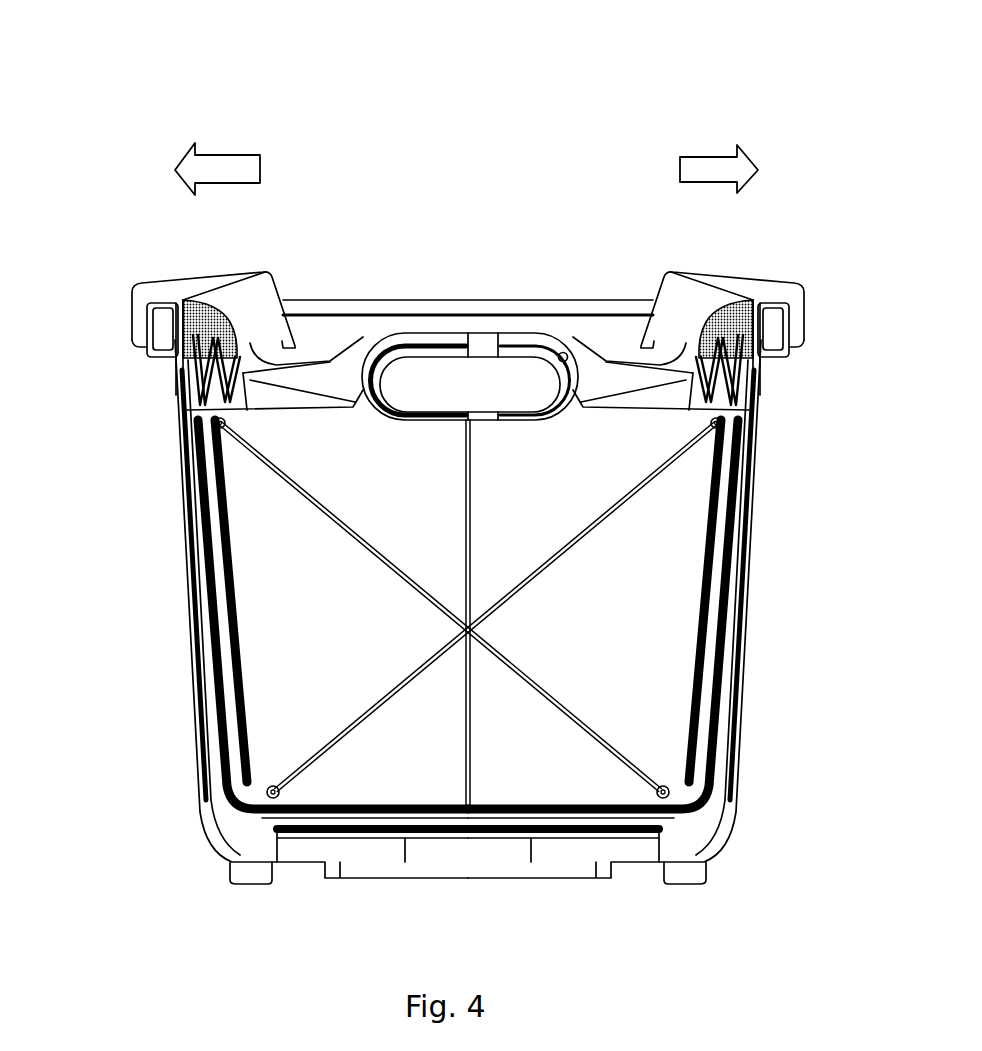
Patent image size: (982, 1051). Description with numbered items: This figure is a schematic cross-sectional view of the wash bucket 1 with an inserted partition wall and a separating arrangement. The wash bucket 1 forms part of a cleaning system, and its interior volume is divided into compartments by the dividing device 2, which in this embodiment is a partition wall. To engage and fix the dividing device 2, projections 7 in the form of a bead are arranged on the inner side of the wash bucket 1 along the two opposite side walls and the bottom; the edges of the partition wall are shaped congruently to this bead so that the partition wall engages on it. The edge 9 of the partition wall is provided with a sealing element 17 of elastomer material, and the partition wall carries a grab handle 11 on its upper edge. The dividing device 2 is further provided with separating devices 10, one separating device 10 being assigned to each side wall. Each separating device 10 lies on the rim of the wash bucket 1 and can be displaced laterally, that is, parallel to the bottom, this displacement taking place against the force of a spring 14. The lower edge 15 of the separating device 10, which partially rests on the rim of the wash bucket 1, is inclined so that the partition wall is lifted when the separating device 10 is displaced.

The wash bucket 1 is at (462, 116).
The dividing device 2 is at (688, 560).
The projections 7 is at (725, 748).
The edge 9 is at (735, 634).
The separating device 10 is at (255, 293).
The grab handle 11 is at (490, 375).
The spring 14 is at (220, 353).
The lower edge 15 is at (285, 302).
The sealing element 17 is at (217, 693).